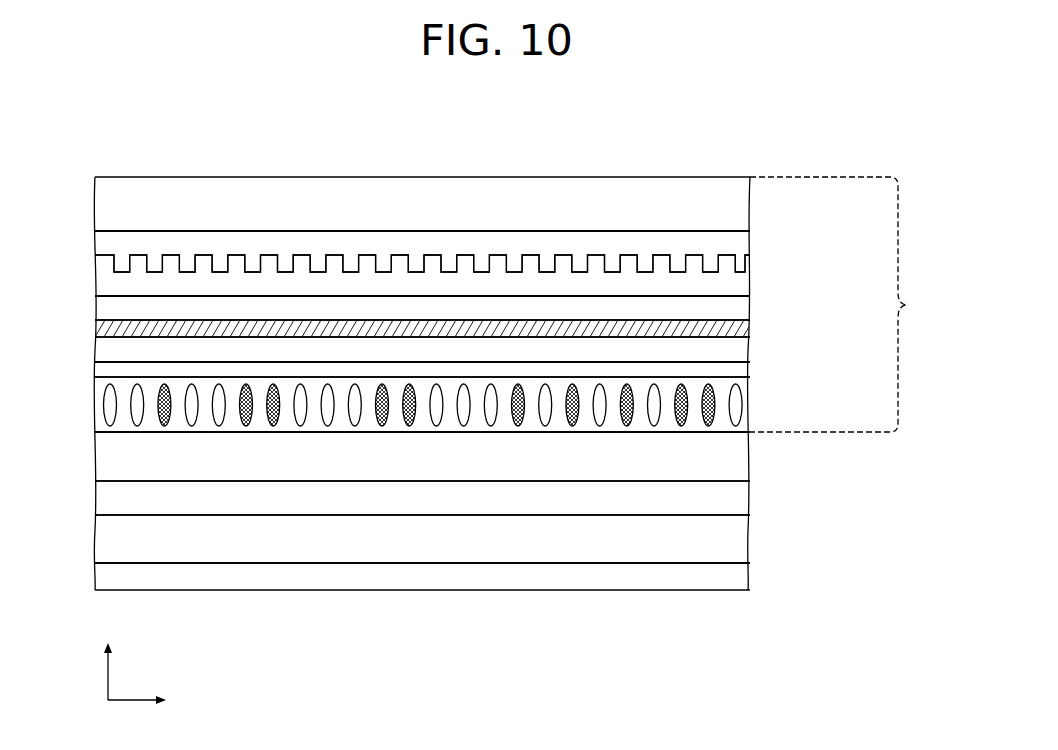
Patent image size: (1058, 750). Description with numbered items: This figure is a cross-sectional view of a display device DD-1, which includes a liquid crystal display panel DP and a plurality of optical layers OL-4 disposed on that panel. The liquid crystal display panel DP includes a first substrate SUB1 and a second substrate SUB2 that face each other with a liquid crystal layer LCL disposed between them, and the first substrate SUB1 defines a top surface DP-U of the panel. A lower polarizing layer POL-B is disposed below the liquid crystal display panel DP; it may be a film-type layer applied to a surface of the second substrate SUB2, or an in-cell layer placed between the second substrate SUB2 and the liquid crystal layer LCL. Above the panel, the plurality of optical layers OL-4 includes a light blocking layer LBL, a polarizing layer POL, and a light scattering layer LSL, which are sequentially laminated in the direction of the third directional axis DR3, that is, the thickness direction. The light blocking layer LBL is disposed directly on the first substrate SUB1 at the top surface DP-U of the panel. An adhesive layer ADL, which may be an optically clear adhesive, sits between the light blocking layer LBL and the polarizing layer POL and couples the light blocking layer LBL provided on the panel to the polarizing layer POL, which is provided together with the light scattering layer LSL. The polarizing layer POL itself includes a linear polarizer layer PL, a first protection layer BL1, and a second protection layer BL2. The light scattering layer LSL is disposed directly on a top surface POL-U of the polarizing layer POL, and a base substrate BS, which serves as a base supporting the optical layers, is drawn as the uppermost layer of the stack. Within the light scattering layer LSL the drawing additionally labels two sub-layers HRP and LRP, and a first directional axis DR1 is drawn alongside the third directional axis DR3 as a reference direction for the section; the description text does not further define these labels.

The display device DD-1 is at (760, 139).
The plurality of optical layers OL-4 is at (855, 304).
The top surface of the polarizing layer POL-U is at (189, 290).
The base substrate BS is at (742, 202).
The light scattering layer LSL is at (830, 230).
The high refractive pattern HRP is at (740, 238).
The low refractive pattern LRP is at (735, 285).
The polarizing layer POL is at (830, 303).
The first protection layer BL1 is at (737, 307).
The linear polarizer layer PL is at (740, 330).
The second protection layer BL2 is at (740, 347).
The adhesive layer ADL is at (735, 368).
The light blocking layer LBL is at (723, 408).
The top surface of the liquid crystal display panel DP-U is at (120, 423).
The liquid crystal display panel DP is at (842, 445).
The first substrate SUB1 is at (740, 455).
The liquid crystal layer LCL is at (737, 497).
The second substrate SUB2 is at (732, 535).
The lower polarizing layer POL-B is at (733, 575).
The third directional axis DR3 is at (107, 659).
The first direction DR1 is at (156, 700).